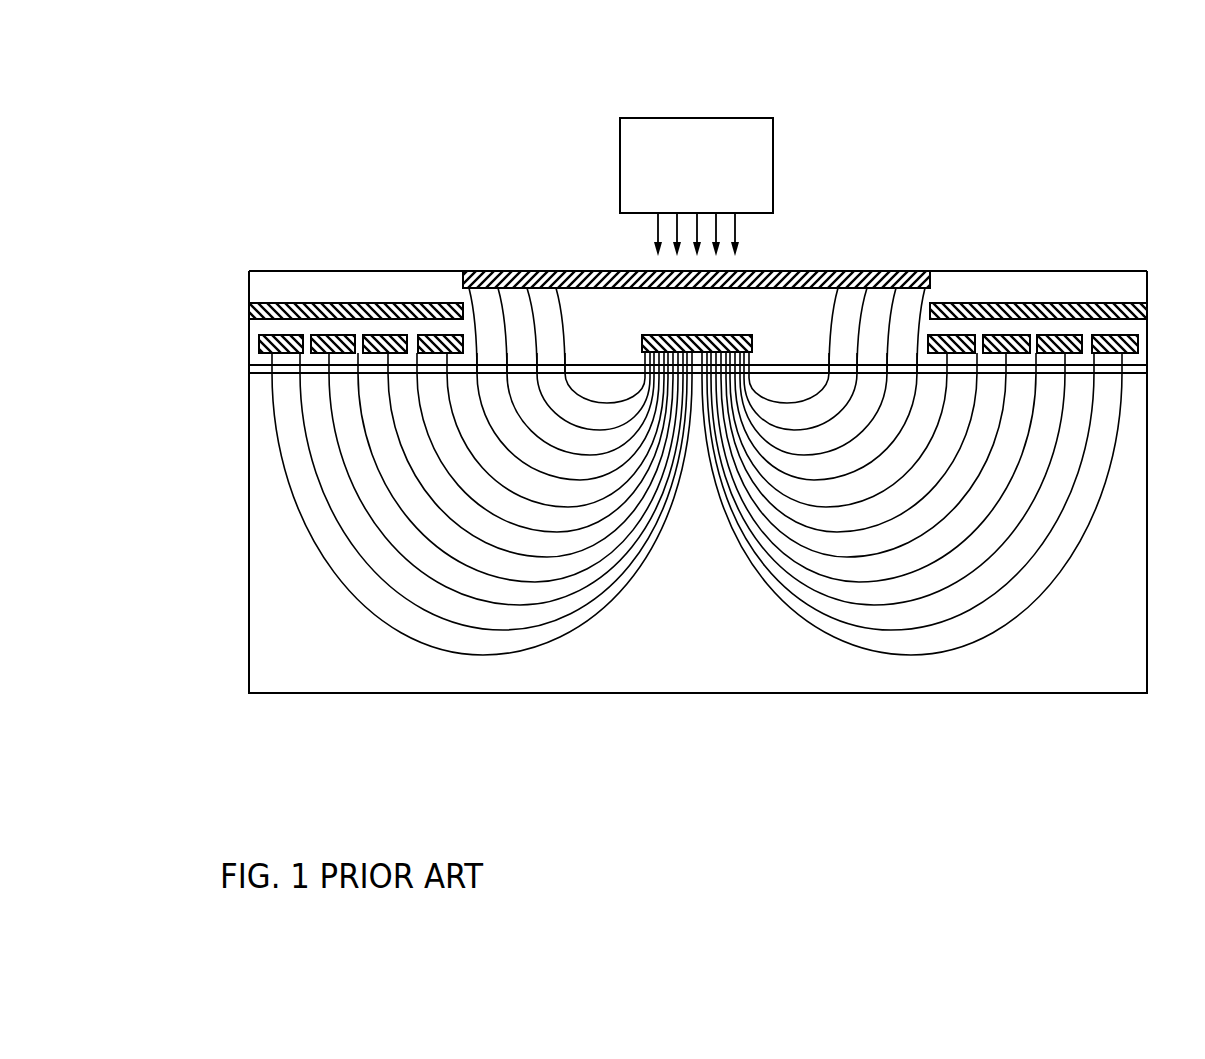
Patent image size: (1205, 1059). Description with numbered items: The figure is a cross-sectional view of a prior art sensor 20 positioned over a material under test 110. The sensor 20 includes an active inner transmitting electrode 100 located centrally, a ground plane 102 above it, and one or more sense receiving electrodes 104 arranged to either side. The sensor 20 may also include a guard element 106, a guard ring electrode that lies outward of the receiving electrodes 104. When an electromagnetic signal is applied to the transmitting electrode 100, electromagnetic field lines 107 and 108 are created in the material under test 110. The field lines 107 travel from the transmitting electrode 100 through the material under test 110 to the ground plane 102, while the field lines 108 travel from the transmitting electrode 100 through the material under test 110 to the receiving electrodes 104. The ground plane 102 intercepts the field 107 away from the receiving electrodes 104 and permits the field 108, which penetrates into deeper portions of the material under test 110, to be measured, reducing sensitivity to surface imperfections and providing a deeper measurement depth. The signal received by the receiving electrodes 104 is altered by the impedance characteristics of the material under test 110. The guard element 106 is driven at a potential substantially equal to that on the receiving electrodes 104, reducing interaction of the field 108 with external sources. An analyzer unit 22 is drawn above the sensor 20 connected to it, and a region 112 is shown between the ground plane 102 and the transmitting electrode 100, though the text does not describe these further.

The sensor 20 is at (926, 130).
The analyzer unit 22 is at (759, 126).
The transmitting electrode 100 is at (736, 338).
The ground plane 102 is at (502, 282).
The receiving electrodes 104 is at (333, 343).
The guard element electrode 106 is at (275, 312).
The electromagnetic field lines 107 is at (785, 492).
The electromagnetic field lines 108 is at (946, 690).
The material under test 110 is at (1100, 684).
The dielectric gap 112 is at (590, 310).